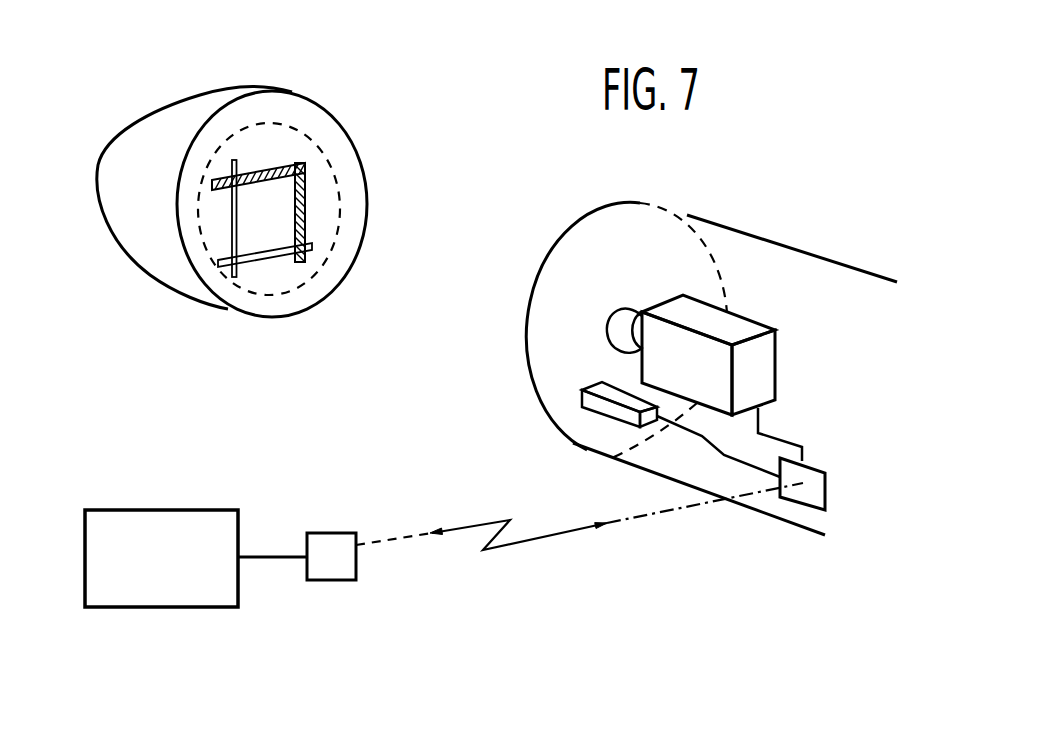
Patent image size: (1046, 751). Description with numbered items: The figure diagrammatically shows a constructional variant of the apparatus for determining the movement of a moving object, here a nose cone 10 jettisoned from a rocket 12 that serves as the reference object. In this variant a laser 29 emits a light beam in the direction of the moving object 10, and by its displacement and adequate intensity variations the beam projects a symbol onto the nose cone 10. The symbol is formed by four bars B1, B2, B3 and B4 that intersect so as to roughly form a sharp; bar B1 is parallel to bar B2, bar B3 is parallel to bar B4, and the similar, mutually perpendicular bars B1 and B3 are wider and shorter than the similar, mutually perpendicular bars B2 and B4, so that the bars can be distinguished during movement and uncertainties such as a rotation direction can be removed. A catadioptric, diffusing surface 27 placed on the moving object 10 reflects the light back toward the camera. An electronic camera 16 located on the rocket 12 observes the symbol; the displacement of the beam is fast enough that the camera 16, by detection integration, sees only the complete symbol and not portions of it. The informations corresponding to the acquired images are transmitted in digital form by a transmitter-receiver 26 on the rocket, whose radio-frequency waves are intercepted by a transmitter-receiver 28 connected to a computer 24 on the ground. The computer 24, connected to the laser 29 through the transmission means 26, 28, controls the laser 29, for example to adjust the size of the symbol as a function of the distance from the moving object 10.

The nose cone 10 is at (168, 97).
The catadioptric diffusing surface 27 is at (313, 128).
The bar B1 is at (267, 163).
The bar B2 is at (273, 253).
The bar B3 is at (300, 212).
The bar B4 is at (232, 223).
The rocket 12 is at (798, 219).
The electronic camera 16 is at (770, 352).
The laser 29 is at (613, 410).
The transmitter-receiver 26 is at (818, 472).
The computer 24 is at (185, 511).
The transmitter-receiver 28 is at (337, 536).